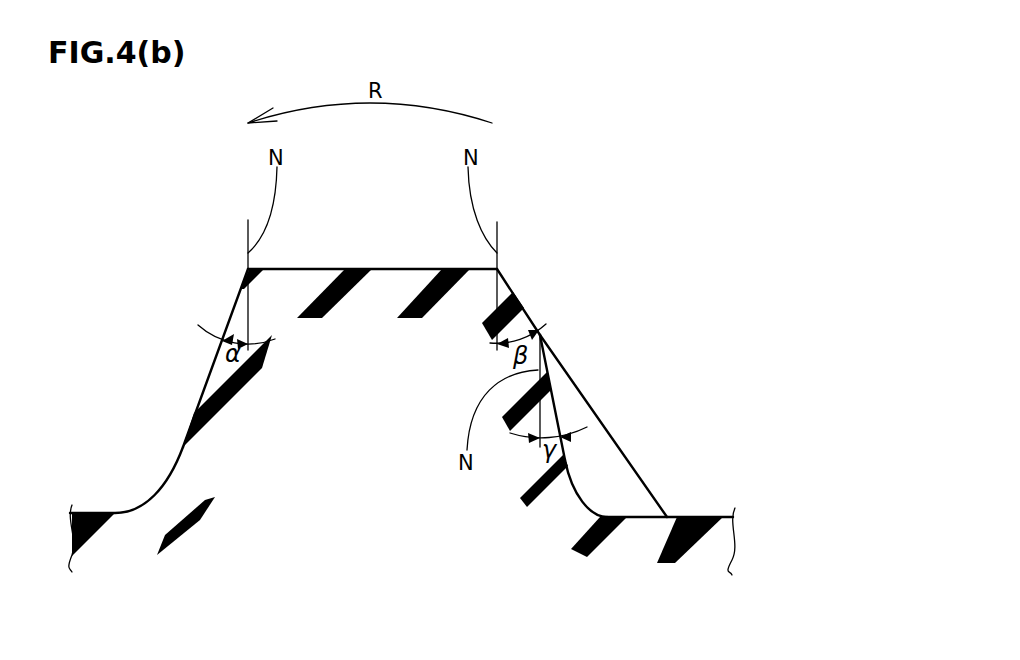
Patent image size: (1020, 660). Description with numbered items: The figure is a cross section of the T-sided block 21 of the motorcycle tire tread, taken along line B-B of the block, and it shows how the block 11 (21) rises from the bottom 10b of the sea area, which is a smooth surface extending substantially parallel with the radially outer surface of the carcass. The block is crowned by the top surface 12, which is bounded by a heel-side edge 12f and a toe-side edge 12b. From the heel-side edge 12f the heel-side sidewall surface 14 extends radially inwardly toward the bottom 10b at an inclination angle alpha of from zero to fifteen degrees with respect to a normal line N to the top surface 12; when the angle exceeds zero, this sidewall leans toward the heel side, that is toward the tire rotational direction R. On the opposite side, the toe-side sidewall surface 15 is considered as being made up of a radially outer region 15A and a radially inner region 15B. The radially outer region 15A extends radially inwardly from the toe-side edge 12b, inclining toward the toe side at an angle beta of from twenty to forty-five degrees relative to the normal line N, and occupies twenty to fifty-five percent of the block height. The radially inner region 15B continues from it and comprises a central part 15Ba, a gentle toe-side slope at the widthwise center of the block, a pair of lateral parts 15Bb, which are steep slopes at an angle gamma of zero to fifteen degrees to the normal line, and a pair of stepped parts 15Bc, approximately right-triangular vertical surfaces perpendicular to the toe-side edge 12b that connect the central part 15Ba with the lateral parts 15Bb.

The bottom of the sea area 10b is at (700, 515).
The tooth of forming die 11 is at (411, 344).
The T-sided block 21 is at (411, 374).
The top surface 12 is at (353, 269).
The heel-side edge 12f is at (247, 268).
The toe-side edge 12b is at (497, 268).
The heel-side sidewall surface 14 is at (209, 371).
The toe-side sidewall surface 15 is at (625, 374).
The radially outer region 15A is at (520, 308).
The radially inner region 15B is at (627, 374).
The central part 15Ba is at (622, 447).
The lateral parts 15Bb is at (557, 413).
The stepped parts 15Bc is at (605, 468).